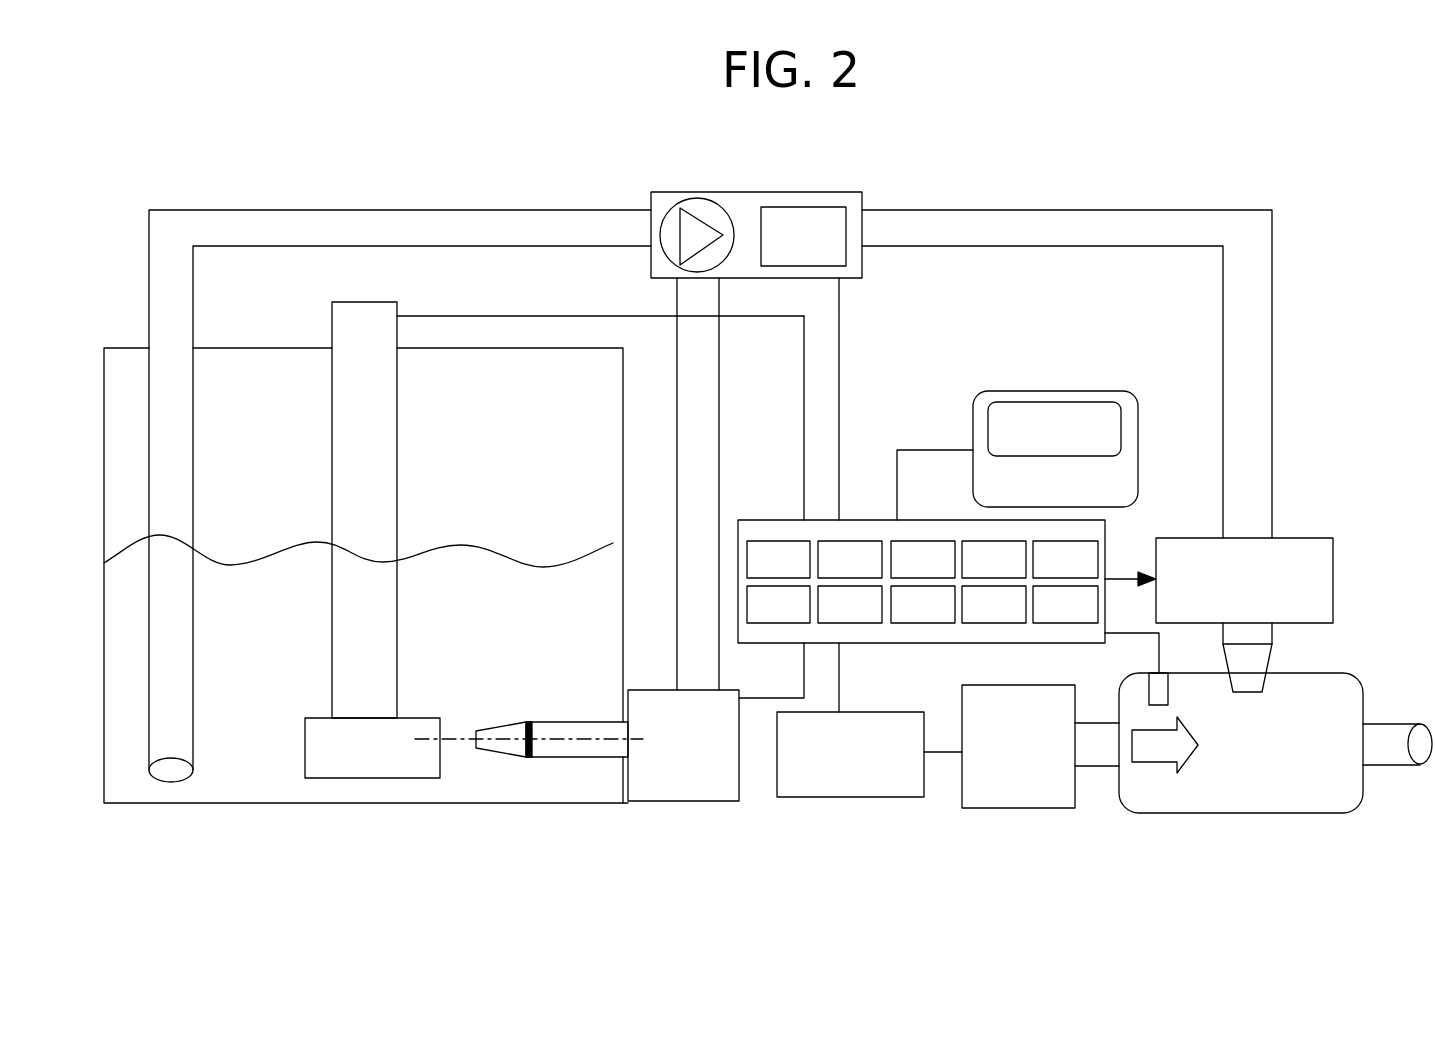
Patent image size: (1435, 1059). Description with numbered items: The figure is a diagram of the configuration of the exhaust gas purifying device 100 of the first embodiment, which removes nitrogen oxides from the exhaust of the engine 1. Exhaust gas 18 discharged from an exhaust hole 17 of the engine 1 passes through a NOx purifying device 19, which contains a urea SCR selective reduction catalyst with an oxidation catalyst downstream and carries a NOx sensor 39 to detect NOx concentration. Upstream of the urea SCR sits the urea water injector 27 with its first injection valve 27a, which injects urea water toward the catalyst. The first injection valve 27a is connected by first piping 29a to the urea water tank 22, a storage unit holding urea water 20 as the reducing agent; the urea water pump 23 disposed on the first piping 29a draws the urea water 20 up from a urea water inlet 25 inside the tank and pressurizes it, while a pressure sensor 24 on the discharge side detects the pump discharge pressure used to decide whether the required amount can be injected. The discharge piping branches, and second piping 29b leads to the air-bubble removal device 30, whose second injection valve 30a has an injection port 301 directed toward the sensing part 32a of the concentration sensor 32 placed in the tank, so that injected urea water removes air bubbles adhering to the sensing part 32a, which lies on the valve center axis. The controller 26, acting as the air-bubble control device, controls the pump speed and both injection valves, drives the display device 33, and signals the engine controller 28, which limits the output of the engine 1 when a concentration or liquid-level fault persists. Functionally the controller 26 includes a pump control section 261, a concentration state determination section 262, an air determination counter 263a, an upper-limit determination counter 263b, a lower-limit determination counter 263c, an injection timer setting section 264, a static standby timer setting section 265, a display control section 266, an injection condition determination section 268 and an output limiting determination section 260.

The exhaust gas purifying device 100 is at (1300, 180).
The engine 1 is at (1012, 780).
The exhaust hole 17 is at (1100, 770).
The exhaust gas 18 is at (1158, 755).
The NOx purifying device 19 is at (1248, 783).
The urea water 20 is at (520, 578).
The urea water tank 22 is at (410, 803).
The urea water pump 23 is at (663, 193).
The pressure sensor 24 is at (790, 223).
The urea water inlet 25 is at (160, 771).
The controller 26 is at (962, 495).
The pump control section 261 is at (799, 571).
The concentration state determination section 262 is at (871, 571).
The air determination counter 263a is at (950, 571).
The upper-limit determination counter 263b is at (1021, 571).
The lower-limit determination counter 263c is at (1092, 571).
The injection timer setting section 264 is at (799, 616).
The static standby timer setting section 265 is at (871, 616).
The display control section 266 is at (944, 616).
The injection condition determination section 268 is at (1015, 616).
The output limiting determination section 260 is at (1086, 616).
The urea water injector 27 is at (1265, 548).
The first injection valve 27a is at (1255, 668).
The engine controller 28 is at (853, 752).
The first piping 29a is at (432, 212).
The second piping 29b is at (700, 460).
The air-bubble removal device 30 is at (680, 755).
The second injection valve 30a is at (497, 727).
The injection port 301 is at (475, 740).
The concentration sensor 32 is at (366, 340).
The sensing part 32a is at (340, 754).
The display device 33 is at (1060, 391).
The NOx sensor 39 is at (1165, 675).